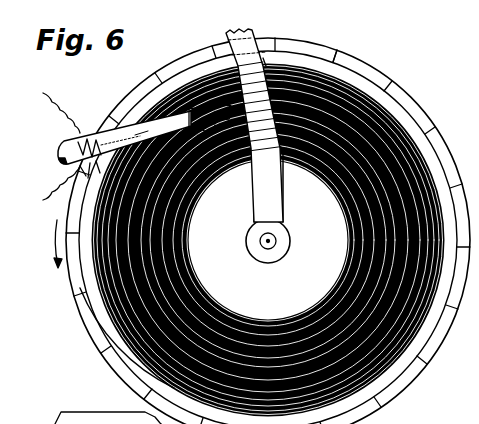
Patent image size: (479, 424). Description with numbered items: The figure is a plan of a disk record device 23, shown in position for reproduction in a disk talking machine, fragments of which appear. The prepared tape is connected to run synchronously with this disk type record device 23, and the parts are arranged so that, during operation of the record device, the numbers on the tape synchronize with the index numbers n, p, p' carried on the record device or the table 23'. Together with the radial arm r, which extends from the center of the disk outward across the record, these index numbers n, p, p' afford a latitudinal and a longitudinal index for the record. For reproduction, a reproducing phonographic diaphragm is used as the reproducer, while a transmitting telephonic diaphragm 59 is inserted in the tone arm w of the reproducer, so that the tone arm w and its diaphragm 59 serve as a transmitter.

The index number n is at (270, 34).
The index number p is at (312, 44).
The index number p' is at (364, 44).
The disk type record device 23 is at (268, 230).
The table 23' is at (119, 338).
The transmitting telephonic diaphragm 59 is at (78, 131).
The tone arm w is at (62, 130).
The radial arm r is at (255, 184).